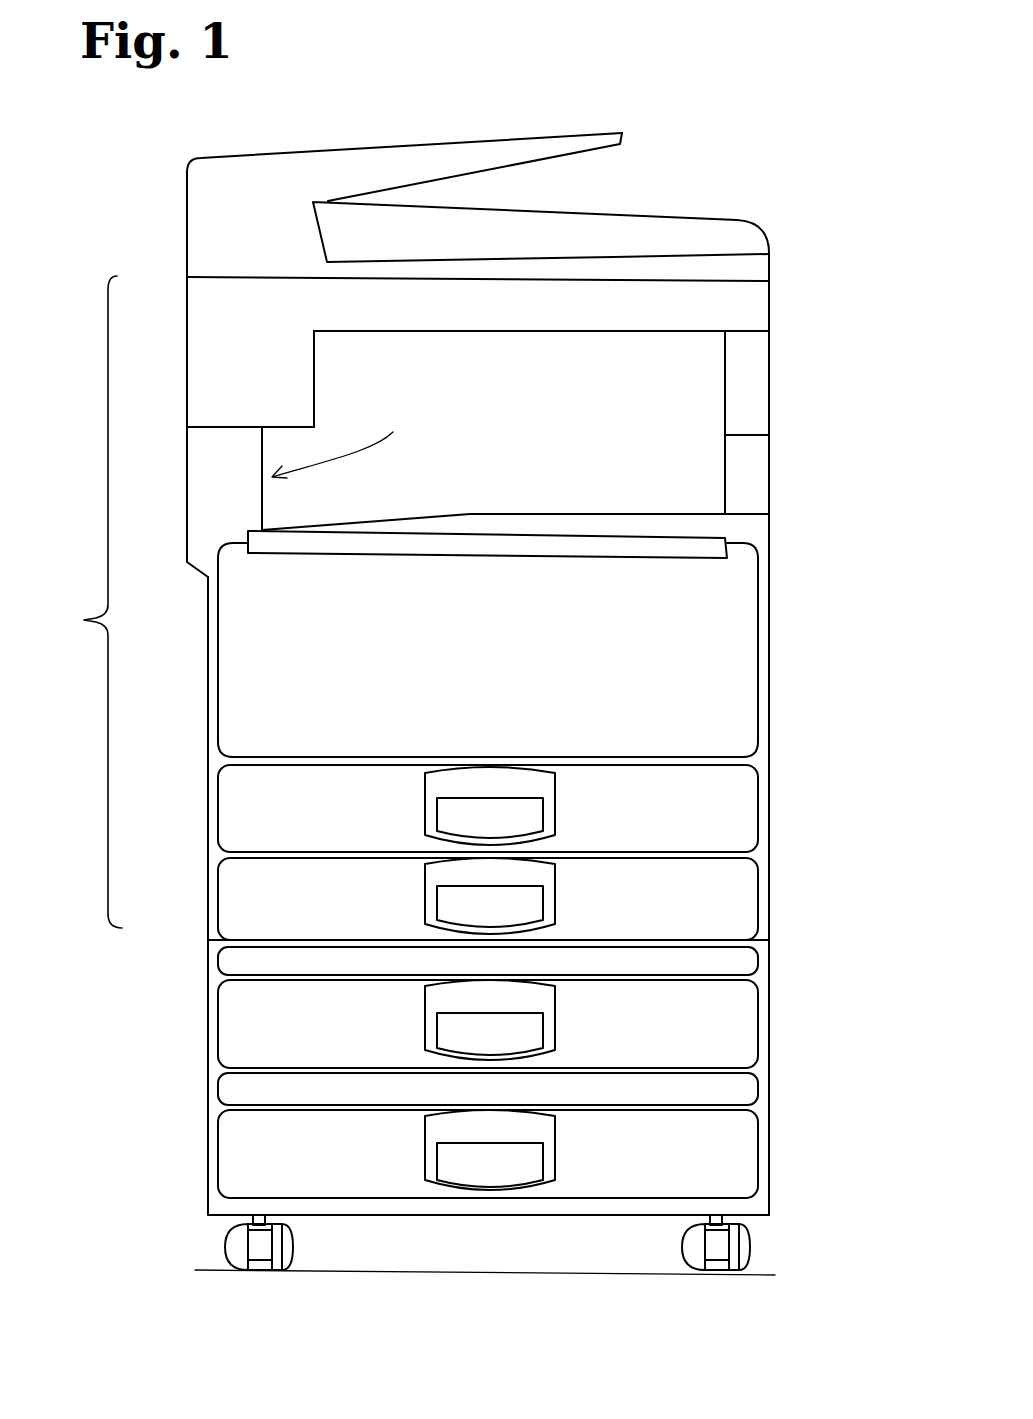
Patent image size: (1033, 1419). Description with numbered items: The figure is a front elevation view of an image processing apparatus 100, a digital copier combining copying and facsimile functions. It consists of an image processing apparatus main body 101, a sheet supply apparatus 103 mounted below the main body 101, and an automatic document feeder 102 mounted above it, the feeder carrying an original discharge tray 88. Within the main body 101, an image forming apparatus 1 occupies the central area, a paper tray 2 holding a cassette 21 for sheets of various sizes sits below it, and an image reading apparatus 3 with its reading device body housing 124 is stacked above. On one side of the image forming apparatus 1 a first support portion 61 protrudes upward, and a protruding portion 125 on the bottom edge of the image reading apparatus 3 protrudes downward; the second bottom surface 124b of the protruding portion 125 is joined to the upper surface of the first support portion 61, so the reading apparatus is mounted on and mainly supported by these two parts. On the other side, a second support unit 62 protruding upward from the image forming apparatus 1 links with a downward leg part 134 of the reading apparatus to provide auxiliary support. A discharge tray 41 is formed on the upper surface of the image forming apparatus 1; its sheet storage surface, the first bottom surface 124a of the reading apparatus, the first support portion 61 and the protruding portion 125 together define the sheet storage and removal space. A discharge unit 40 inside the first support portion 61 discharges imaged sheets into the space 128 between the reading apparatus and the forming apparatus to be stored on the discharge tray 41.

The image processing apparatus 100 is at (687, 65).
The automatic document feeder 102 is at (187, 200).
The original discharge tray 88 is at (613, 257).
The image reading apparatus 3 is at (791, 304).
The reading device body housing 124 is at (473, 333).
The space 128 is at (580, 393).
The protruding portion 125 is at (300, 392).
The second bottom surface 124b is at (215, 437).
The first support portion 61 is at (203, 461).
The discharge unit 40 is at (354, 443).
The first bottom surface 124a is at (433, 333).
The leg part 134 is at (760, 405).
The second support unit 62 is at (762, 476).
The discharge tray 41 is at (603, 514).
The image forming apparatus 1 is at (789, 626).
The paper tray 2 is at (539, 849).
The cassette 21 is at (745, 912).
The sheet supply apparatus 103 is at (208, 1085).
The image processing apparatus main body 101 is at (71, 602).